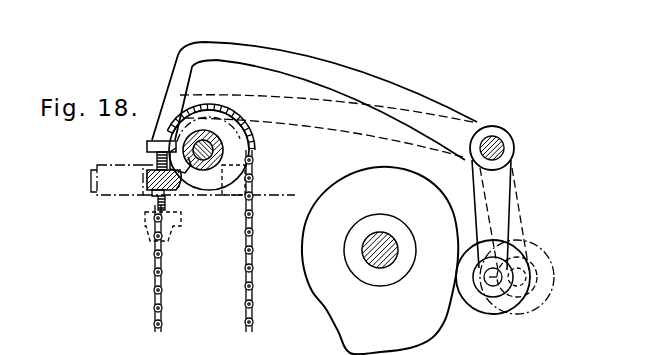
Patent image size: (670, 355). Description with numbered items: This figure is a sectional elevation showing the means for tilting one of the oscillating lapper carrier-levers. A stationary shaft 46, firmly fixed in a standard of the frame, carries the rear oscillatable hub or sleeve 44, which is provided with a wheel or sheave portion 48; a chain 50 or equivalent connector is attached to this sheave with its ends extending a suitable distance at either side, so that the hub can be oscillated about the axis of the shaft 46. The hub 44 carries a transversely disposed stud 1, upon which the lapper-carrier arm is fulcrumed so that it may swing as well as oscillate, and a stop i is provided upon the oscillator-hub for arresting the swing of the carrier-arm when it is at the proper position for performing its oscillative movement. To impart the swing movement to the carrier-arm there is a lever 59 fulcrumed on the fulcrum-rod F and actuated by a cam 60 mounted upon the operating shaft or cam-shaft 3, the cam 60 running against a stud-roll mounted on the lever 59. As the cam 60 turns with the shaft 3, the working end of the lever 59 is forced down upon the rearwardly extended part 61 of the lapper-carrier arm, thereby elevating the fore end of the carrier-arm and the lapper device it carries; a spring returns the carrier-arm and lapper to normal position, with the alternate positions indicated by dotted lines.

The lever 59 is at (320, 74).
The fulcrum-rod F is at (503, 139).
The wheel or sheave portion 48 is at (230, 173).
The stationary shaft 46 is at (224, 149).
The oscillatable hub 44 is at (215, 156).
The stop i is at (184, 166).
The cam 60 is at (380, 261).
The operating shaft or cam-shaft 3 is at (378, 251).
The stud 1 is at (90, 180).
The rearwardly extended part 61 is at (150, 186).
The chain 50 is at (254, 227).